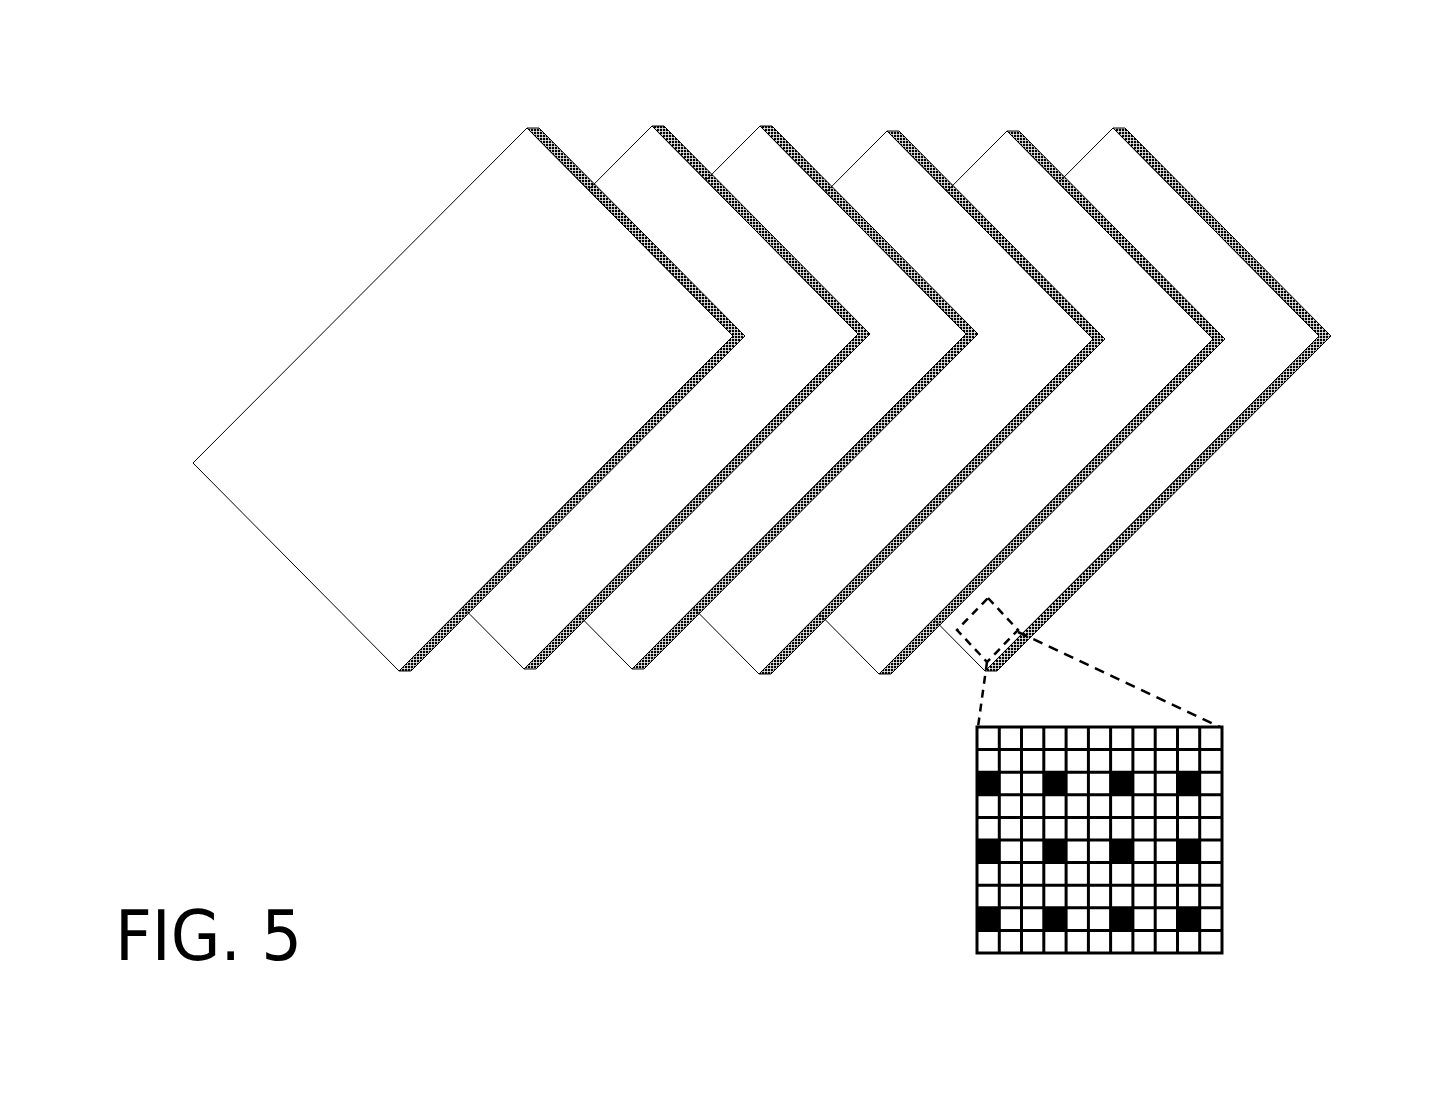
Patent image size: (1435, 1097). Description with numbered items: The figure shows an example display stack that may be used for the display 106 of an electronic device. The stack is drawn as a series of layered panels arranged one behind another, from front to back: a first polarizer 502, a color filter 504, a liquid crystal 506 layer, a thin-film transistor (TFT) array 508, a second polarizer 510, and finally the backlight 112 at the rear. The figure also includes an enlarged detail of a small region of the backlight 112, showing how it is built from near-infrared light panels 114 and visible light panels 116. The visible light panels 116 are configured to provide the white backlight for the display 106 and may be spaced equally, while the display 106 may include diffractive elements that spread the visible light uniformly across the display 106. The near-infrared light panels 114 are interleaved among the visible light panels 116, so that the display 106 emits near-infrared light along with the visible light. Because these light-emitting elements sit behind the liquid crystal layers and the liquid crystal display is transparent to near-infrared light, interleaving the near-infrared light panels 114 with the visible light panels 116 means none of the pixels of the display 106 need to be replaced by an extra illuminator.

The display 106 is at (247, 108).
The first polarizer 502 is at (337, 332).
The color filter 504 is at (652, 145).
The liquid crystal layer 506 is at (632, 657).
The thin-film transistor (TFT) array 508 is at (885, 145).
The second polarizer 510 is at (875, 653).
The backlight 112 is at (1182, 208).
The near-infrared light panels 114 is at (977, 910).
The visible light panels 116 is at (1213, 758).